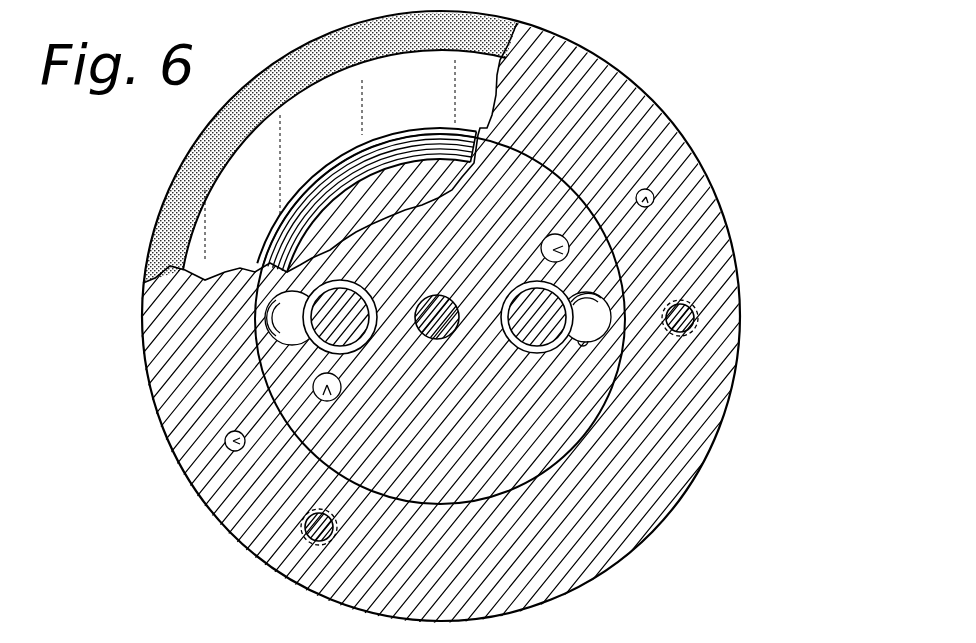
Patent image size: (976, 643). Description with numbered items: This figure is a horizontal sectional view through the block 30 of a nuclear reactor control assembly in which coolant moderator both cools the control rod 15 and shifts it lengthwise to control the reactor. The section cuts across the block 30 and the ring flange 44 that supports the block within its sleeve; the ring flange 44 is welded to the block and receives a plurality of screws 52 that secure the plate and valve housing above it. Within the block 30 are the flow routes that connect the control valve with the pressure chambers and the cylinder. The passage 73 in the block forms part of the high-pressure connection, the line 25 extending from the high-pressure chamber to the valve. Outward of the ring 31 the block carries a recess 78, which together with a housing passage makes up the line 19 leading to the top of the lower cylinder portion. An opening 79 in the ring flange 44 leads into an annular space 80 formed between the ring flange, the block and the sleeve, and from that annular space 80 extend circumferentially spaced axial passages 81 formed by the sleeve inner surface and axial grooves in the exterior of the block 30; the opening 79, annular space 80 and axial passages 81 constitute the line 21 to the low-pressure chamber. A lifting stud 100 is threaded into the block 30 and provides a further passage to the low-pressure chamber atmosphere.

The control rod 15 is at (352, 329).
The line 19 is at (291, 322).
The line 21 is at (225, 443).
The line 25 is at (318, 398).
The block 30 is at (456, 418).
The ring 31 is at (281, 303).
The ring flange 44 is at (668, 508).
The screws 52 is at (328, 541).
The passage 73 is at (313, 386).
The recess 78 is at (283, 331).
The opening 79 is at (227, 447).
The annular space 80 is at (192, 216).
The axial passages 81 is at (376, 160).
The lifting stud 100 is at (437, 350).